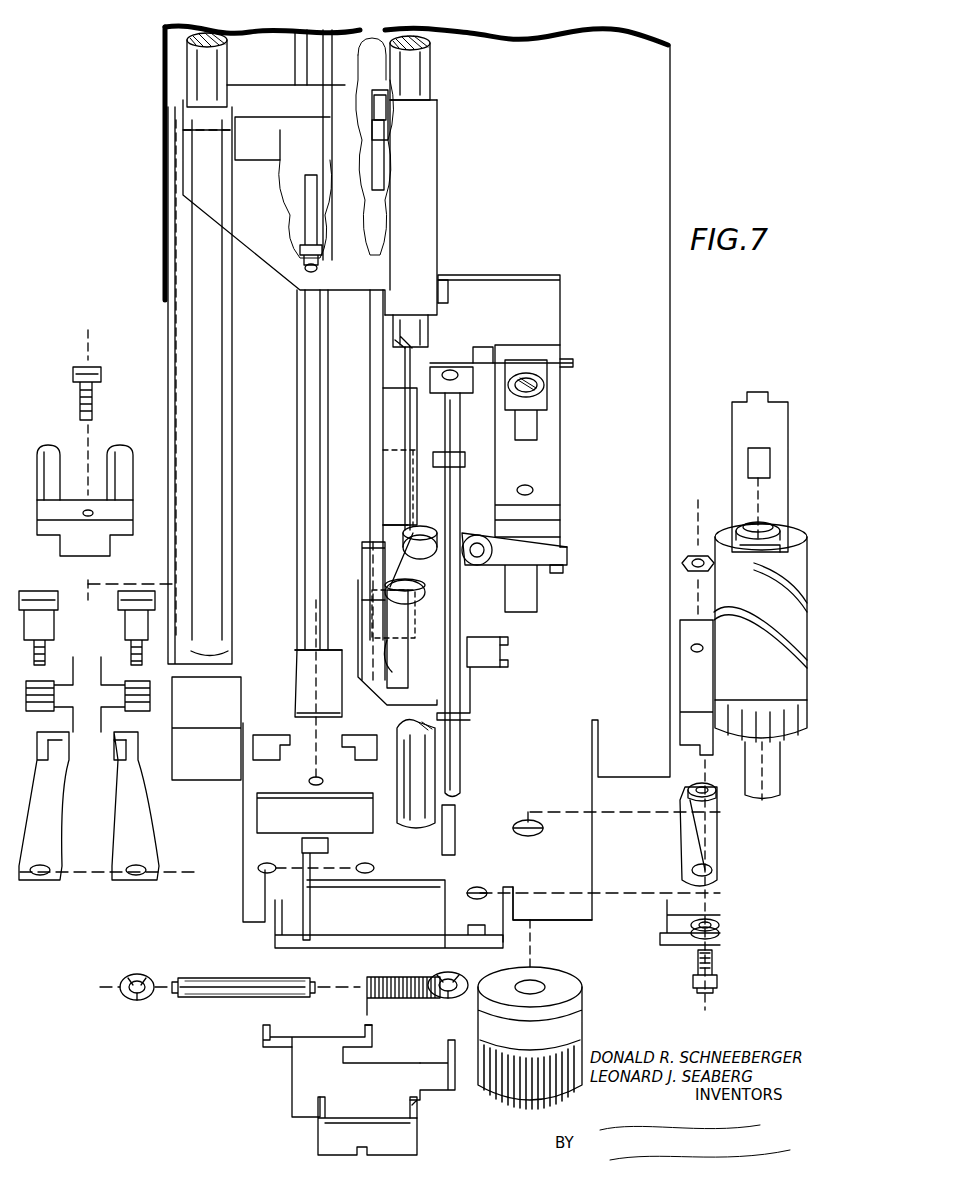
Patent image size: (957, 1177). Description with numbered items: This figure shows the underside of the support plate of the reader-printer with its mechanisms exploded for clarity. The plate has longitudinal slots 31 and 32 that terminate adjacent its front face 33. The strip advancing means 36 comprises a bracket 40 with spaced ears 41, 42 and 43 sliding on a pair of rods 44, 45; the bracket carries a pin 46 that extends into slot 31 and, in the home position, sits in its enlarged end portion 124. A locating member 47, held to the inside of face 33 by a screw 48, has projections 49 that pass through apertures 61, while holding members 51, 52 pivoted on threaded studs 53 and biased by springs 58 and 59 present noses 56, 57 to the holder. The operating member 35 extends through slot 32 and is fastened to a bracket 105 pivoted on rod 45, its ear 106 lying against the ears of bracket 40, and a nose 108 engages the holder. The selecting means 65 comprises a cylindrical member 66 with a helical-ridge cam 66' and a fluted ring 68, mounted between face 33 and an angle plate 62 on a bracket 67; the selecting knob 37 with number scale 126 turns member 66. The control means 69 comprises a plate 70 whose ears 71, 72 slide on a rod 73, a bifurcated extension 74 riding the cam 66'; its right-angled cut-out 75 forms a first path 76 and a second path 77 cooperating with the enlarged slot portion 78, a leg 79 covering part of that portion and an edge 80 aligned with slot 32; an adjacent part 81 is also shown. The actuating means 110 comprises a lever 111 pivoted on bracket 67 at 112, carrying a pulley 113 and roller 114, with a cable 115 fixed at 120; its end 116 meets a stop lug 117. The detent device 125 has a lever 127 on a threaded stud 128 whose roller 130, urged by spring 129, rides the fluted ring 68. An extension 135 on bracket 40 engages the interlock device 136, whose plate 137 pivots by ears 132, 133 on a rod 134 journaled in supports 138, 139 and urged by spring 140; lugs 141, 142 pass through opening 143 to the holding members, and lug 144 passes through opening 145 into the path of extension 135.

The longitudinal slot 31 is at (307, 62).
The longitudinal slot 32 is at (375, 412).
The front face 33 is at (575, 855).
The operating member 35 is at (362, 48).
The strip advancing means 36 is at (270, 198).
The selecting knob 37 is at (525, 1098).
The bracket 40 is at (437, 200).
The ear 41 is at (187, 88).
The ear 42 is at (437, 98).
The ear 43 is at (440, 312).
The rod 44 is at (222, 386).
The rod 45 is at (430, 62).
The pin 46 is at (318, 192).
The locating member 47 is at (125, 498).
The screw 48 is at (94, 398).
The projections 49 is at (45, 445).
The holding member 51 is at (55, 812).
The holding member 52 is at (118, 822).
The threaded stud 53 is at (58, 600).
The nose 56 is at (68, 757).
The nose 57 is at (118, 760).
The spring 58 is at (60, 685).
The spring 59 is at (125, 685).
The apertures 61 is at (280, 735).
The angle plate 62 is at (732, 437).
The selecting means 65 is at (802, 509).
The cylindrical member 66 is at (761, 611).
The helical-ridge cam 66' is at (760, 622).
The bracket 67 is at (560, 313).
The fluted ring 68 is at (790, 742).
The control means 69 is at (484, 694).
The plate 70 is at (362, 555).
The ear 71 is at (462, 455).
The ear 72 is at (470, 716).
The rod 73 is at (462, 610).
The bifurcated extension 74 is at (503, 668).
The right-angled cut-out 75 is at (375, 680).
The first path 76 is at (393, 612).
The second path 77 is at (383, 525).
The enlarged slot portion 78 is at (410, 632).
The leg 79 is at (365, 590).
The edge 80 is at (383, 440).
The arm 81 is at (392, 660).
The bracket 105 is at (380, 180).
The ear 106 is at (386, 105).
The nose 108 is at (372, 102).
The actuating means 110 is at (540, 518).
The lever 111 is at (502, 560).
The pivot 112 is at (480, 540).
The pulley 113 is at (418, 556).
The roller 114 is at (410, 602).
The cable 115 is at (403, 354).
The end 116 is at (567, 552).
The stop lug 117 is at (563, 572).
The cable fixing point 120 is at (526, 360).
The enlarged end portion 124 is at (300, 680).
The detent device 125 is at (736, 856).
The number scale 126 is at (478, 1005).
The lever 127 is at (683, 838).
The threaded stud 128 is at (717, 978).
The spring 129 is at (720, 920).
The roller 130 is at (712, 795).
The ear 132 is at (318, 1140).
The ear 133 is at (417, 1140).
The rod 134 is at (245, 978).
The extension 135 is at (446, 290).
The interlock device 136 is at (348, 1080).
The plate 137 is at (277, 1082).
The support 138 is at (310, 893).
The support 139 is at (430, 905).
The spring 140 is at (407, 977).
The lug 141 is at (263, 1032).
The lug 142 is at (372, 1030).
The opening 143 is at (258, 800).
The lug 144 is at (455, 1075).
The opening 145 is at (455, 830).